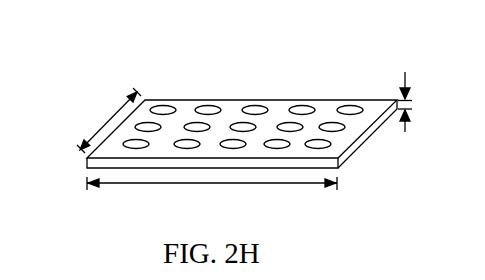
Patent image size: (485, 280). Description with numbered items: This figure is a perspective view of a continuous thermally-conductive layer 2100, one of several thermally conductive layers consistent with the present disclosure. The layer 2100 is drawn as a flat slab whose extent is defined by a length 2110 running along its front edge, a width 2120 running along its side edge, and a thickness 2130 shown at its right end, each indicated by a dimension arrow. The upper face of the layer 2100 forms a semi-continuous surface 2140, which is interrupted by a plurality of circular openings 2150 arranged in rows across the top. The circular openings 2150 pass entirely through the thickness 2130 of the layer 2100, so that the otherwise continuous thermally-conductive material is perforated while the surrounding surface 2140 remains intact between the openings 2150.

The continuous thermally-conductive layer 2100 is at (271, 119).
The length 2110 is at (212, 192).
The width 2120 is at (98, 120).
The thickness 2130 is at (428, 102).
The semi-continuous surface 2140 is at (368, 121).
The circular openings 2150 is at (163, 108).